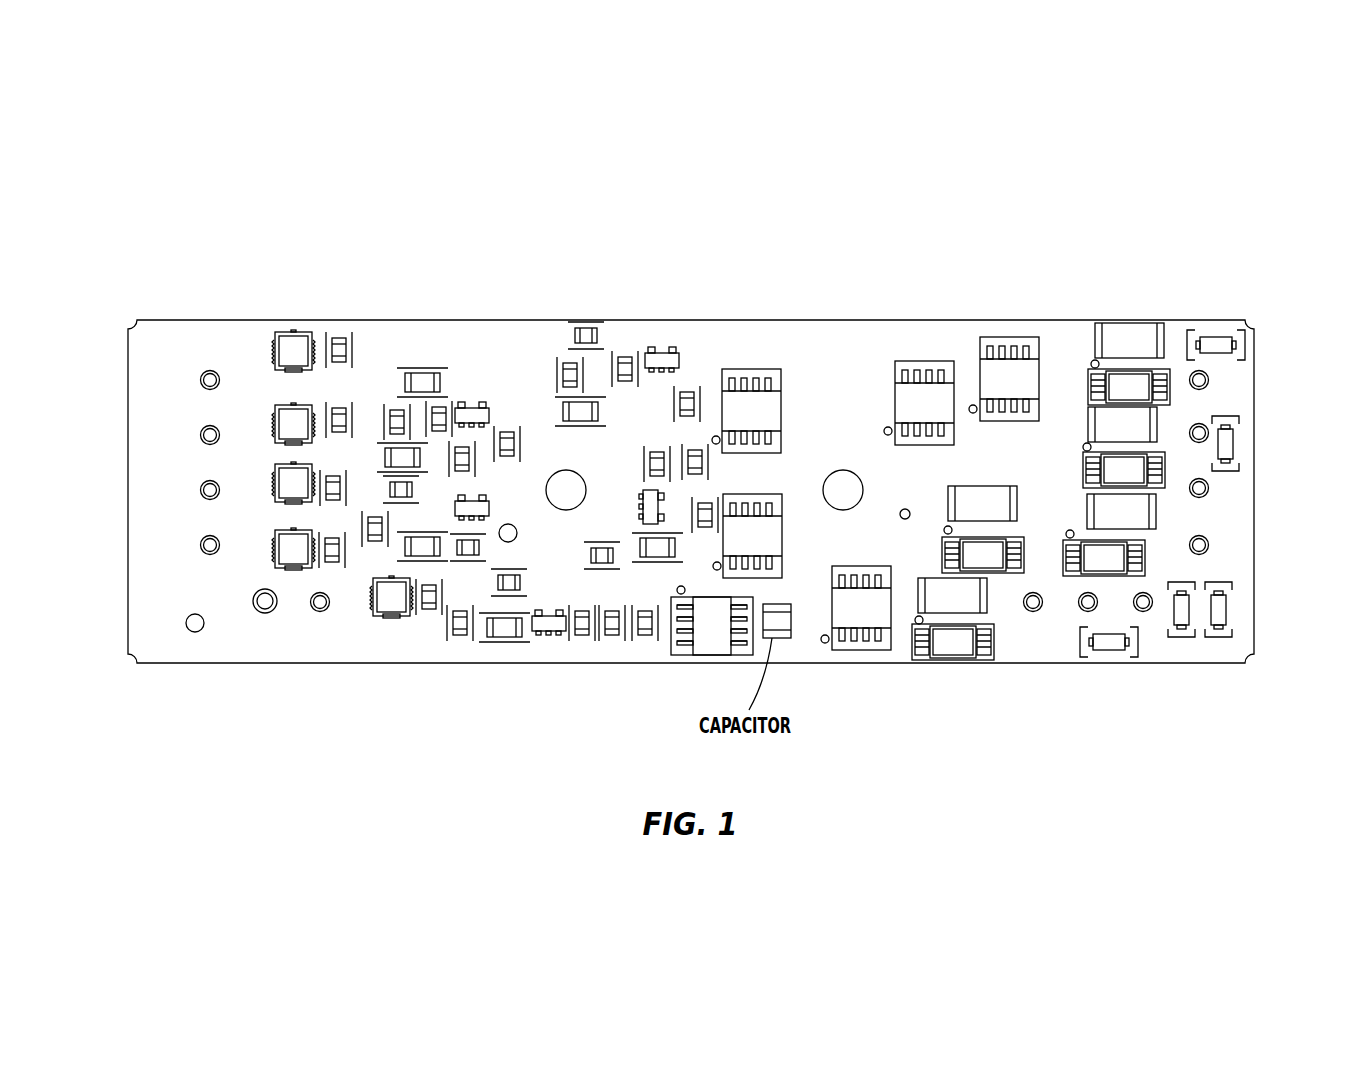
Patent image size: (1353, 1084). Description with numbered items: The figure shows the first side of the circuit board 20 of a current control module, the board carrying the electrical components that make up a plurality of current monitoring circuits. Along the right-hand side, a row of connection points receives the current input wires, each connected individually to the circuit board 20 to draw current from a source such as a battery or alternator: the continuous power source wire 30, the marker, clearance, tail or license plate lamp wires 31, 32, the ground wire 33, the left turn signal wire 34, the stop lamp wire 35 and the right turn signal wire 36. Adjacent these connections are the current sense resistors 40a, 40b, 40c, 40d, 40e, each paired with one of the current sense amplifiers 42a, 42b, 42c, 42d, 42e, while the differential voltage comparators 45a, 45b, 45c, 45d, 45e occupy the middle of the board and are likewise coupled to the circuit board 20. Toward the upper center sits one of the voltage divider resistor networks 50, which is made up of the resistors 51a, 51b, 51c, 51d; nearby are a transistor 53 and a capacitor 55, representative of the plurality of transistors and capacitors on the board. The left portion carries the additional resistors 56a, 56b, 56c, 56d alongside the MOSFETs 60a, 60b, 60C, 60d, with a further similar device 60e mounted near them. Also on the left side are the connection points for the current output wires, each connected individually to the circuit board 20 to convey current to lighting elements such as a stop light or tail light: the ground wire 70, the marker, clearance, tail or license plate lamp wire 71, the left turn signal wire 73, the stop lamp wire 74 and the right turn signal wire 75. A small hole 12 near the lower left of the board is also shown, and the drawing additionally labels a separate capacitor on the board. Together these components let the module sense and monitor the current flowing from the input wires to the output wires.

The circuit board 20 is at (180, 320).
The mounting hole 12 is at (213, 554).
The continuous power source input wire 30 is at (1036, 612).
The marker, clearance, tail or license plate lamp input wire 31 is at (1089, 612).
The marker, clearance, tail or license plate lamp input wire 32 is at (1209, 546).
The ground input wire 33 is at (1145, 612).
The left turn signal input wire 34 is at (1209, 489).
The stop lamp input wire 35 is at (1209, 434).
The right turn signal input wire 36 is at (1209, 381).
The current sense resistor 40a is at (1122, 322).
The current sense resistor 40b is at (1088, 428).
The current sense resistor 40c is at (1157, 513).
The current sense resistor 40d is at (947, 512).
The current sense resistor 40e is at (990, 598).
The current sense amplifier 42a is at (1092, 372).
The current sense amplifier 42b is at (1166, 465).
The current sense amplifier 42c is at (1145, 568).
The current sense amplifier 42d is at (1012, 573).
The current sense amplifier 42e is at (925, 660).
The differential voltage comparator 45a is at (983, 337).
The differential voltage comparator 45b is at (912, 361).
The differential voltage comparator 45c is at (781, 398).
The differential voltage comparator 45d is at (782, 495).
The differential voltage comparator 45e is at (862, 650).
The voltage divider resistor network 50 is at (591, 296).
The resistor 51a is at (625, 358).
The resistor 51b is at (575, 335).
The resistor 51c is at (567, 373).
The resistor 51d is at (690, 392).
The transistor 53 is at (678, 359).
The capacitor 55 is at (562, 410).
The resistor 56a is at (340, 338).
The resistor 56b is at (353, 410).
The resistor 56c is at (331, 500).
The resistor 56d is at (332, 562).
The MOSFET 60a is at (300, 331).
The MOSFET 60b is at (283, 404).
The MOSFET 60C is at (278, 468).
The MOSFET 60d is at (293, 569).
The LED 60e is at (393, 600).
The ground output wire 70 is at (265, 613).
The marker, clearance, tail or license plate lamp output wire 71 is at (321, 612).
The left turn signal output wire 73 is at (208, 500).
The stop lamp output wire 74 is at (200, 435).
The right turn signal output wire 75 is at (200, 380).